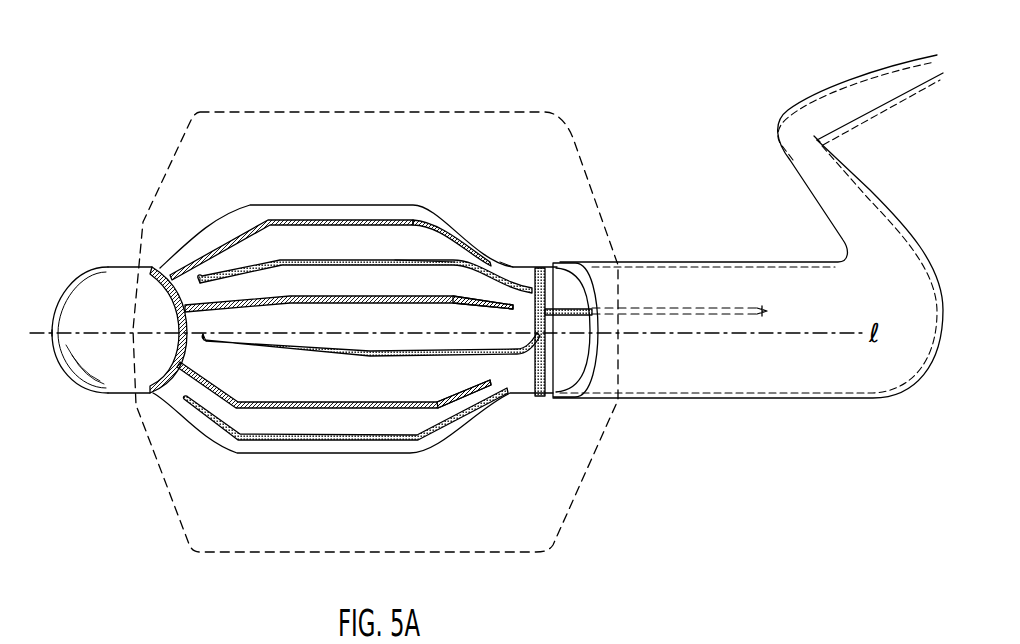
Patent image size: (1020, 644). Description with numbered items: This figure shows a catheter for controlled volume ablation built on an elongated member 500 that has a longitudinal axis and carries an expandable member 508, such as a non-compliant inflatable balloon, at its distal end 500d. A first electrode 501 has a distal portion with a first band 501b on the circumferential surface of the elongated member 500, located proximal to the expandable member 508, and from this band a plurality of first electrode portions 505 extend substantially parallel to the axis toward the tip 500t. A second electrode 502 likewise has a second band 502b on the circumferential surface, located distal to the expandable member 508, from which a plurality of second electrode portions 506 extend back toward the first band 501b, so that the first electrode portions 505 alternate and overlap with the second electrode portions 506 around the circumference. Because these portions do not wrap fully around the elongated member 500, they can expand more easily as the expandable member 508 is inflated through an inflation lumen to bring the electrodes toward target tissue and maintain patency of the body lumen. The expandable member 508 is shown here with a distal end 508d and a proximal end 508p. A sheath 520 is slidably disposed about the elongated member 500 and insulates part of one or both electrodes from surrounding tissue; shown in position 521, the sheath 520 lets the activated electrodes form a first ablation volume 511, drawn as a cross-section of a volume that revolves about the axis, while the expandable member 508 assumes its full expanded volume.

The elongated member 500 is at (315, 323).
The distal end of the elongated member 500d is at (77, 333).
The tip of the elongated member 500t is at (52, 340).
The first electrode 501 is at (388, 260).
The first band 501b is at (513, 267).
The second electrode 502 is at (183, 240).
The second band 502b is at (150, 266).
The first electrode portions 505 is at (410, 258).
The second electrode portions 506 is at (172, 258).
The expandable member 508 is at (395, 313).
The distal end of inner body 508d is at (222, 400).
The proximal end of inner body 508p is at (527, 340).
The first ablation volume 511 is at (388, 553).
The sheath 520 is at (677, 260).
The position of the sheath 521 is at (567, 400).